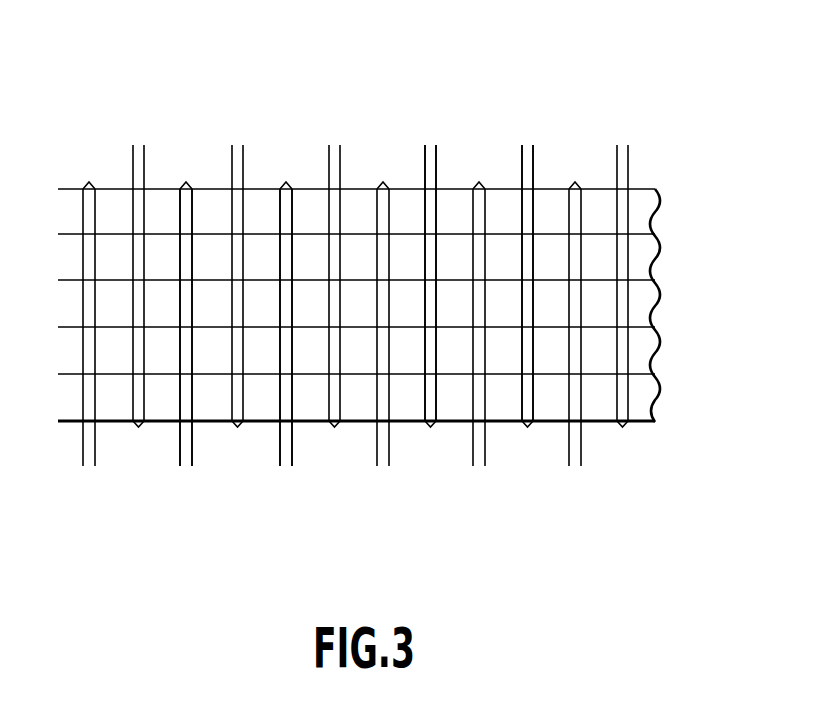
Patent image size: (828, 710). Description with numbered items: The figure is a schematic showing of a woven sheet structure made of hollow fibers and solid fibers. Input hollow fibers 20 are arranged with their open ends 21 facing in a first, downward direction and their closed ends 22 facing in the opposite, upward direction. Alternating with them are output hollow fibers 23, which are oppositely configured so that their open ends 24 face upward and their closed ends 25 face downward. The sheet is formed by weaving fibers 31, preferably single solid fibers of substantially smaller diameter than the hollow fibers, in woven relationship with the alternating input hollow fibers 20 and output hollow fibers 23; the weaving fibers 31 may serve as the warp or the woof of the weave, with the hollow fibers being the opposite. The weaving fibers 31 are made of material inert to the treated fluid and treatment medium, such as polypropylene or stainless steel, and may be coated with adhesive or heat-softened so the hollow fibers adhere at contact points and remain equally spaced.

The input hollow fibers 20 is at (192, 456).
The open ends 21 is at (284, 465).
The closed ends 22 is at (186, 189).
The output hollow fibers 23 is at (438, 157).
The open ends 24 is at (431, 145).
The closed ends 25 is at (428, 421).
The weaving fibers 31 is at (657, 240).